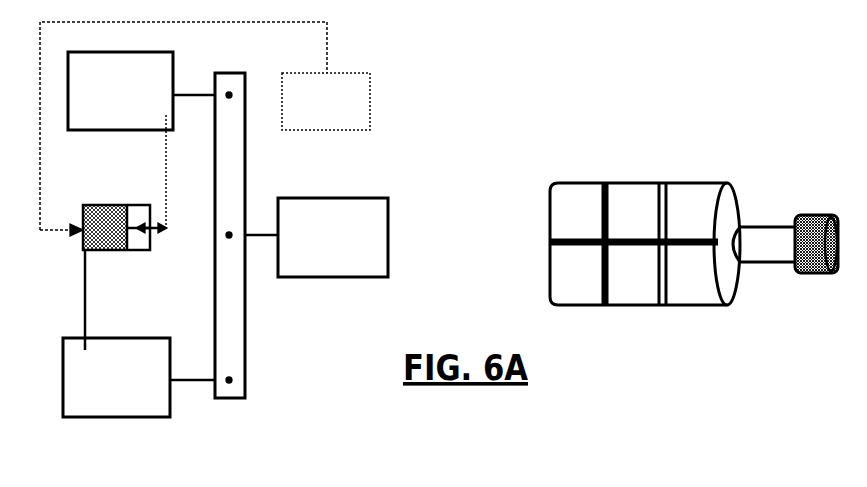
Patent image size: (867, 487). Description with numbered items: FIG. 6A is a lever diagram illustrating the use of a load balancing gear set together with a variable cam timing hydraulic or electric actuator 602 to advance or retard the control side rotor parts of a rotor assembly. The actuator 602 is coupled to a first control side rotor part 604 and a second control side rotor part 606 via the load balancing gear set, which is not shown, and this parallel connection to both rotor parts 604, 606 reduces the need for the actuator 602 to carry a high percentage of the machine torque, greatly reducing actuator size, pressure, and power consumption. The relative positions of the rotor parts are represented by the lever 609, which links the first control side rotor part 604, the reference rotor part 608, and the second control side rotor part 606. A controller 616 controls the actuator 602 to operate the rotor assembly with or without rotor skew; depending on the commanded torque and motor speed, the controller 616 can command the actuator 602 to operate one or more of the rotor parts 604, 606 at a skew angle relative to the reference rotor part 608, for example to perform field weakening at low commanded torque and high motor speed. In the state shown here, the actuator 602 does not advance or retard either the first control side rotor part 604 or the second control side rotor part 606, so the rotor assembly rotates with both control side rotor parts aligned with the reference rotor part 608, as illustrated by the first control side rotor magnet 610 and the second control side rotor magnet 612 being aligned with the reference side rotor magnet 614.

The variable cam timing hydraulic (or electric) actuator 602 is at (108, 204).
The first control side rotor part 604 is at (326, 140).
The second control side rotor part 606 is at (353, 309).
The reference rotor part 608 is at (489, 237).
The lever 609 is at (242, 190).
The first control side rotor magnet 610 is at (580, 252).
The second control side rotor magnet 612 is at (625, 252).
The reference side rotor magnet 614 is at (690, 252).
The controller 616 is at (205, 126).